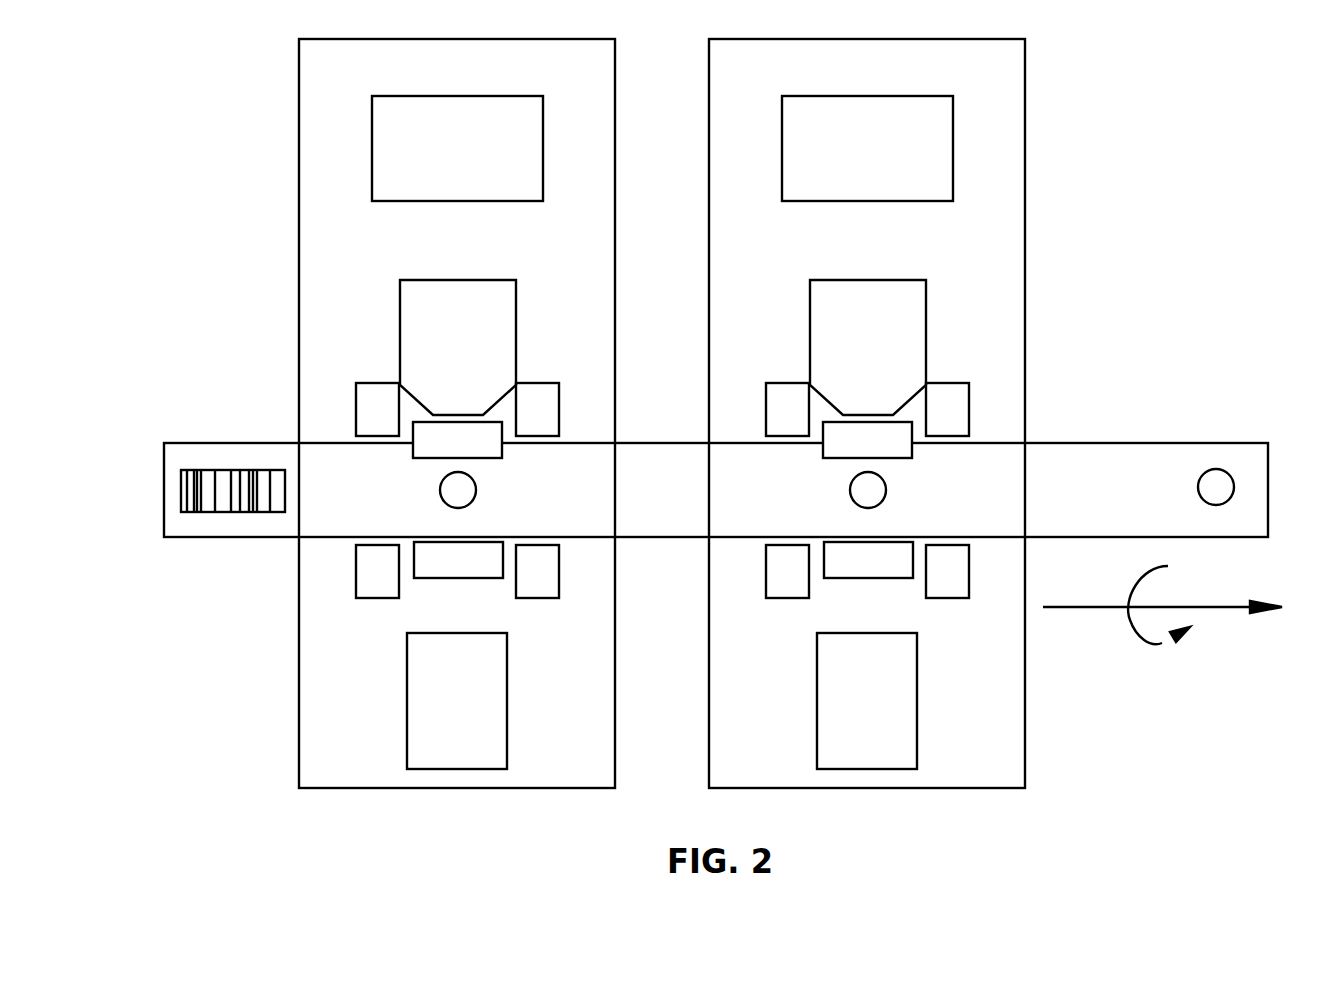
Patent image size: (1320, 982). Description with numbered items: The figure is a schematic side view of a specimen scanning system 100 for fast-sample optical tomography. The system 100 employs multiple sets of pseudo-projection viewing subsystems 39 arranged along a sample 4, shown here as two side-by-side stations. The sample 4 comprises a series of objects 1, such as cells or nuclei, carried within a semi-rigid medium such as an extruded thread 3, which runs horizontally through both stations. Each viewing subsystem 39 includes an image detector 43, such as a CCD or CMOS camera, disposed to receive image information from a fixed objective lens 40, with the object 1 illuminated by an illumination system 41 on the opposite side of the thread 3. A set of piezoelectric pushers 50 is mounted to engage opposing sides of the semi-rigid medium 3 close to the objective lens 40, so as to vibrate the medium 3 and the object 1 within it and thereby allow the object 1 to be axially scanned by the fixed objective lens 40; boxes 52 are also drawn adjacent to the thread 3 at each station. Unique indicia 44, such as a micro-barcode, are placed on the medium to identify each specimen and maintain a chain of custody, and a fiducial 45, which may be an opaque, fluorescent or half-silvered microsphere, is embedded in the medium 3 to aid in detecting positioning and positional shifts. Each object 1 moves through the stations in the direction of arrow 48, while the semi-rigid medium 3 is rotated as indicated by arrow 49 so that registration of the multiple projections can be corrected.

The object 1 is at (476, 490).
The extruded thread 3 is at (342, 538).
The sample 4 is at (1165, 443).
The pseudo-projection viewing subsystem 39 is at (356, 82).
The objective lens 40 is at (516, 327).
The illumination system 41 is at (507, 700).
The image detector 43 is at (530, 201).
The unique indicia 44 is at (235, 470).
The fiducial 45 is at (1198, 487).
The arrow 48 is at (1084, 607).
The arrow 49 is at (1145, 652).
The piezoelectric pusher 50 is at (393, 425).
The weighing unit 52 is at (472, 452).
The specimen scanning system 100 is at (1233, 106).